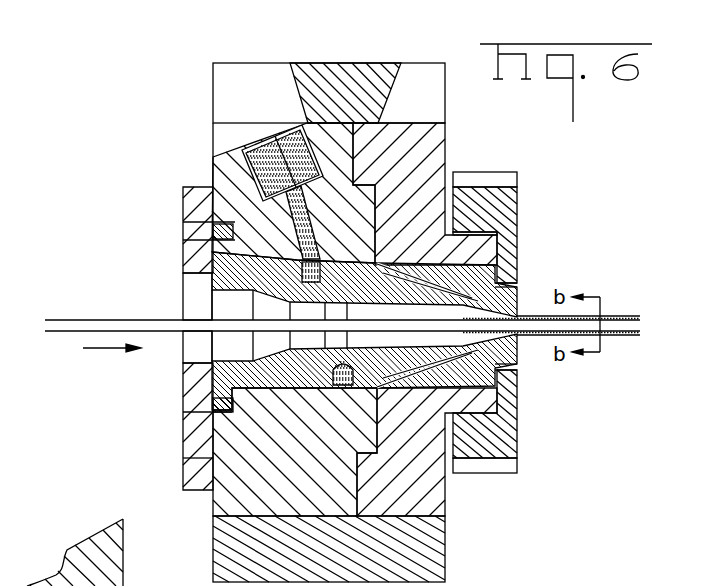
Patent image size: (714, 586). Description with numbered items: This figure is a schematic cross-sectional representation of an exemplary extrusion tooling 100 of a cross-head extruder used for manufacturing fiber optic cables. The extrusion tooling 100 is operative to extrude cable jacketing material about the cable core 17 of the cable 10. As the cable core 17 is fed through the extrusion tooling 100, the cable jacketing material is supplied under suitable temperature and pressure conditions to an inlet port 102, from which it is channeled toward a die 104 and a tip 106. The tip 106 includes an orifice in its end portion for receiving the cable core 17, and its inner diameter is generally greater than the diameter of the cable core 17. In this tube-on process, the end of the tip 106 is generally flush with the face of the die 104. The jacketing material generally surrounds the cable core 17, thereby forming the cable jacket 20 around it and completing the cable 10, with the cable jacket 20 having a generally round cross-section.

The extrusion tooling 100 is at (172, 100).
The inlet port 102 is at (283, 137).
The die 104 is at (517, 300).
The tip 106 is at (517, 372).
The cable 10 is at (624, 308).
The cable jacket 20 is at (633, 338).
The cable core 17 is at (123, 320).